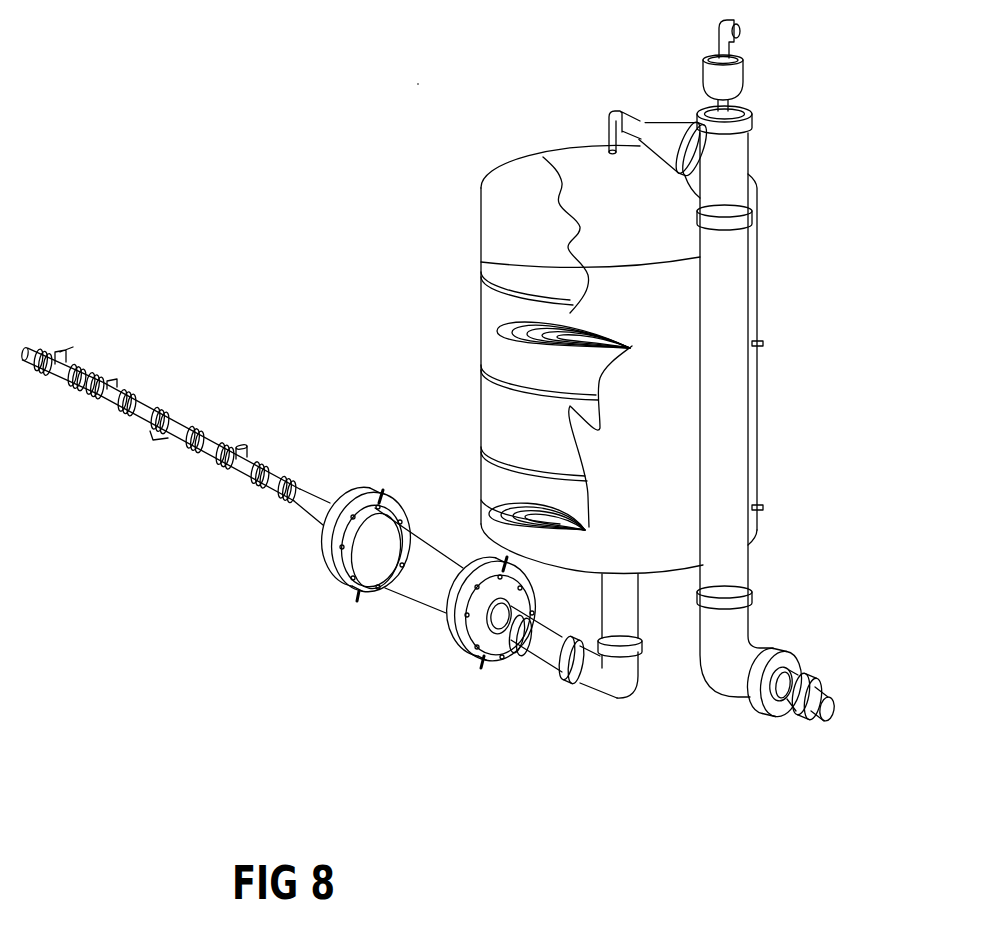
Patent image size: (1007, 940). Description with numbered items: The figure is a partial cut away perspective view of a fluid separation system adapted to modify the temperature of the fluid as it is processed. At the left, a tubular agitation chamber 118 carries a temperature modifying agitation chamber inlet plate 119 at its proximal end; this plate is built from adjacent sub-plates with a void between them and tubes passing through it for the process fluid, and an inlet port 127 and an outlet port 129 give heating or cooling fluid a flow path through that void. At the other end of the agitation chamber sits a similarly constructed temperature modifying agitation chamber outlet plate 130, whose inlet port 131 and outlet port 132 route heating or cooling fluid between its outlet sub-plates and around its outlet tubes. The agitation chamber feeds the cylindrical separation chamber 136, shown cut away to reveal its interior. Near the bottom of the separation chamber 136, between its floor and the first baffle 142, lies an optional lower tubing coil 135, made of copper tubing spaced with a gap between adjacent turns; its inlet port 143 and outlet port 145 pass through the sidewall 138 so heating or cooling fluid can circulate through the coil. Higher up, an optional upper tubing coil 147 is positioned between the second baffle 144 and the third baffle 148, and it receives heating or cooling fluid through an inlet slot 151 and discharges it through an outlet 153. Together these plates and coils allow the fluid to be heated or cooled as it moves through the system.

The agitation chamber 118 is at (403, 608).
The temperature modifying agitation chamber inlet plate 119 is at (332, 566).
The inlet port 127 is at (357, 601).
The outlet port 129 is at (380, 490).
The temperature modifying agitation chamber outlet plate 130 is at (470, 652).
The inlet port 131 is at (482, 668).
The outlet port 132 is at (504, 560).
The lower tubing coil 135 is at (498, 510).
The separation chamber 136 is at (462, 467).
The sidewall 138 is at (481, 386).
The first baffle 142 is at (553, 448).
The inlet port 143 is at (606, 537).
The second baffle 144 is at (533, 364).
The outlet port 145 is at (763, 507).
The upper tubing coil 147 is at (518, 320).
The third baffle 148 is at (547, 283).
The inlet slot 151 is at (633, 350).
The outlet 153 is at (763, 343).